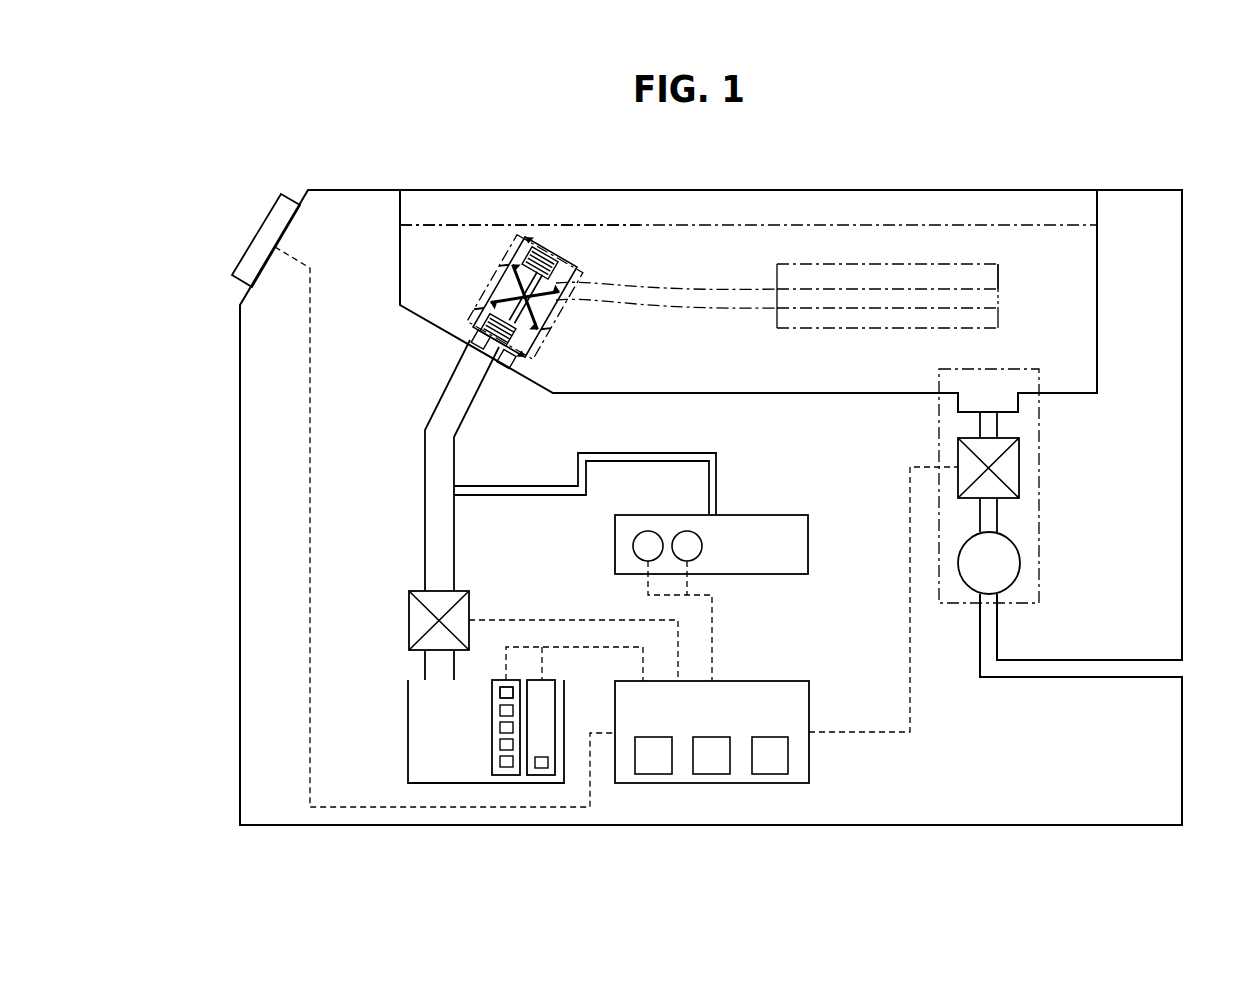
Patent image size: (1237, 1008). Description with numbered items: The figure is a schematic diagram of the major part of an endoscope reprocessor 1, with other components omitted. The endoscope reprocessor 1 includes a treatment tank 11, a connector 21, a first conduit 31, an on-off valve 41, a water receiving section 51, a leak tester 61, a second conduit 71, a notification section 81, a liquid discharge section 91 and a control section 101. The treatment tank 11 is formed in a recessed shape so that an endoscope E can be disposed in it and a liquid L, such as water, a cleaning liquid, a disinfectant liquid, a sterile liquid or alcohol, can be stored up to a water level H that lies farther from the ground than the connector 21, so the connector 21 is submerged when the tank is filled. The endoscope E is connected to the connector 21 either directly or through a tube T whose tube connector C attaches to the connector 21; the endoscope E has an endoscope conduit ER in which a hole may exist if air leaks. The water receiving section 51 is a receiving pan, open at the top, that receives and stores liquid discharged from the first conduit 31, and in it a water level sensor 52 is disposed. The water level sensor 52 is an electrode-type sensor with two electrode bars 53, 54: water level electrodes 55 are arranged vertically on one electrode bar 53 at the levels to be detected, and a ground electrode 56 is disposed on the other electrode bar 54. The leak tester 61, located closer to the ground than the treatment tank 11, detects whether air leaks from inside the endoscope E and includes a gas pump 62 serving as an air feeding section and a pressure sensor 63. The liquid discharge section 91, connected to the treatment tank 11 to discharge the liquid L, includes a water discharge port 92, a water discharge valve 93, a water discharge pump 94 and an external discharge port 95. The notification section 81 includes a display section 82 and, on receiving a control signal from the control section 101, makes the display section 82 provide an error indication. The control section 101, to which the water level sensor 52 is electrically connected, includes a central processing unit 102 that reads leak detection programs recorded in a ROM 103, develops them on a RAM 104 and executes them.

The endoscope reprocessor 1 is at (1092, 146).
The treatment tank 11 is at (918, 190).
The connector 21 is at (470, 318).
The first conduit 31 is at (424, 458).
The on-off valve 41 is at (409, 622).
The water receiving section 51 is at (407, 730).
The water level sensor 52 is at (561, 678).
The electrode bar 53 is at (490, 730).
The electrode bar 54 is at (556, 710).
The water level electrodes 55 is at (493, 700).
The ground electrode 56 is at (541, 768).
The leak tester 61 is at (772, 515).
The gas pump 62 is at (645, 531).
The pressure sensor 63 is at (684, 531).
The second conduit 71 is at (685, 453).
The notification section 81 is at (266, 212).
The display section 82 is at (237, 262).
The liquid discharge section 91 is at (990, 370).
The water discharge port 92 is at (1021, 408).
The water discharge valve 93 is at (1020, 466).
The water discharge pump 94 is at (1021, 563).
The external discharge port 95 is at (1175, 672).
The control section 101 is at (772, 681).
The central processing unit 102 is at (656, 775).
The ROM 103 is at (714, 775).
The RAM 104 is at (773, 775).
The tube connector C is at (497, 253).
The water level H is at (741, 225).
The liquid L is at (636, 238).
The tube T is at (650, 300).
The endoscope conduit ER is at (906, 288).
The endoscope E is at (1000, 273).